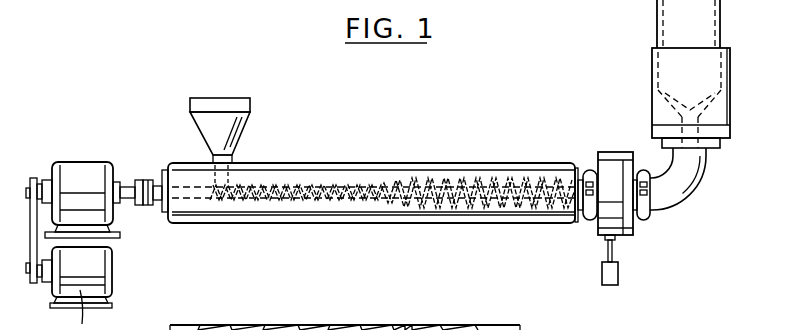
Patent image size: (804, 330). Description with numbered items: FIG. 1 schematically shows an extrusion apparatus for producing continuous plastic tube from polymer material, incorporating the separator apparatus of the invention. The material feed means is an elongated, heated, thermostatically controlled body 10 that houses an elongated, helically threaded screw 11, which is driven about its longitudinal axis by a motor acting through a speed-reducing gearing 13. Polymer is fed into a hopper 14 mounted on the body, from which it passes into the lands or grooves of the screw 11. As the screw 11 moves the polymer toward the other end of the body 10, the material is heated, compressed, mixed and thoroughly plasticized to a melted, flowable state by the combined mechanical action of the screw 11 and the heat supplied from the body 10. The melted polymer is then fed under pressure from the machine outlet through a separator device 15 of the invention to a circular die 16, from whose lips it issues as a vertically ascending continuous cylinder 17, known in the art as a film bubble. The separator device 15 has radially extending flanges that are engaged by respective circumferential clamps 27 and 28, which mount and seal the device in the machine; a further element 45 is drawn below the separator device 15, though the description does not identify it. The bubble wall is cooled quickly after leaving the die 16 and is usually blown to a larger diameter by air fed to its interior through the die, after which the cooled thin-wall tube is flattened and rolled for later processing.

The body 10 is at (422, 140).
The screw 11 is at (158, 208).
The speed-reducing gearing 13 is at (81, 163).
The hopper 14 is at (233, 124).
The separator device 15 is at (612, 146).
The circular die 16 is at (670, 70).
The continuous cylinder 17 is at (657, 30).
The circumferential clamp 27 is at (590, 223).
The circumferential clamp 28 is at (648, 223).
The valve actuator 45 is at (614, 284).